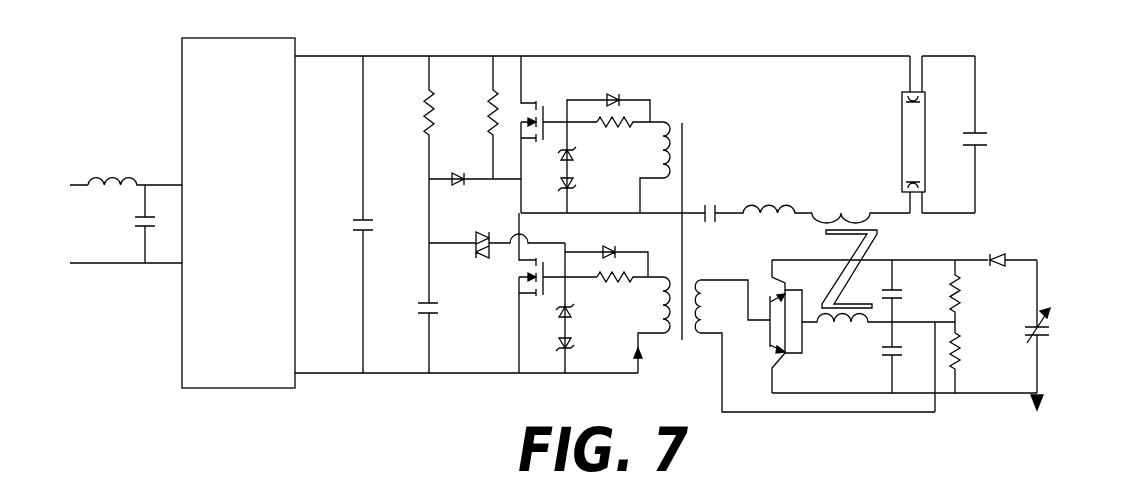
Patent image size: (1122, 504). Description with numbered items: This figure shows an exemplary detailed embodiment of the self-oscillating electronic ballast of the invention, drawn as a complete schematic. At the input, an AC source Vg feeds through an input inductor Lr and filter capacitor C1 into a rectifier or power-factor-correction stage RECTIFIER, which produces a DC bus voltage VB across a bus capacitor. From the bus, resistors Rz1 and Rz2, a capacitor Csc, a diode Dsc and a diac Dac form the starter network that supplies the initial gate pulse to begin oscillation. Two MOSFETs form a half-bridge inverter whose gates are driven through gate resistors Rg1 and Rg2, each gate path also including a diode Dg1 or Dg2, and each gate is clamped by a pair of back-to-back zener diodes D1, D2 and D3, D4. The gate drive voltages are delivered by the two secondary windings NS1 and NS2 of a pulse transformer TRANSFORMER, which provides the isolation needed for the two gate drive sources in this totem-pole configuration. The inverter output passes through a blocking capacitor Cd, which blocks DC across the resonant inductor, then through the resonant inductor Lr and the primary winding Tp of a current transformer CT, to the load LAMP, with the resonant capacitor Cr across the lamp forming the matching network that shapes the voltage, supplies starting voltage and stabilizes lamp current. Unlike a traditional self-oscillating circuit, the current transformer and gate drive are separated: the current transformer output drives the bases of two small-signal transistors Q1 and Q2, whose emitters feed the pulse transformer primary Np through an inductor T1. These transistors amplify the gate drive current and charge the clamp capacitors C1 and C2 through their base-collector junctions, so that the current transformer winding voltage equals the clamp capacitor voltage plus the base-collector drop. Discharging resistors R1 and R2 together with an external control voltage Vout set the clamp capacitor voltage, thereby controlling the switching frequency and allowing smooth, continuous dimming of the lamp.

The input voltage source Vg is at (120, 224).
The inductance Lr is at (450, 177).
The clamp capacitor C1 is at (518, 253).
The rectifier or PFC circuit RECTIFIER is at (238, 213).
The bus voltage VB is at (341, 214).
The resistor Rz1 is at (404, 179).
The resistor Rz2 is at (471, 117).
The start-up capacitor Csc is at (406, 324).
The diode Dsc is at (475, 163).
The diac Dac is at (497, 227).
The gate resistor Rg1 is at (630, 92).
The gate diode Dg1 is at (598, 89).
The zener diode D1 is at (780, 194).
The zener diode D2 is at (550, 188).
The current transformer winding NS1 is at (637, 167).
The pulse transformer TRANSFORMER is at (734, 215).
The gate resistor Rg2 is at (630, 249).
The gate diode Dg2 is at (604, 295).
The zener diode D3 is at (547, 312).
The zener diode D4 is at (547, 349).
The current transformer winding NS2 is at (623, 324).
The capacitor Cd is at (708, 196).
The primary winding of current transformer Tp is at (861, 196).
The current transformer CT is at (827, 259).
The lamp LAMP is at (902, 134).
The high frequency capacitor Cr is at (988, 134).
The current transformer winding Np is at (815, 345).
The small signal transistor Q1 is at (791, 303).
The small signal transistor Q2 is at (903, 341).
The inductor T1 is at (878, 363).
The clamp capacitor C2 is at (906, 357).
The discharging resistor R1 is at (973, 296).
The discharging resistor R2 is at (973, 363).
The output voltage Vout is at (1059, 335).